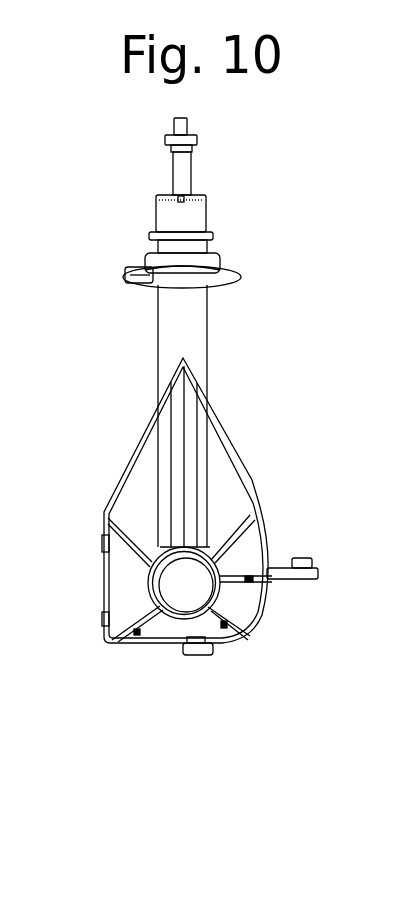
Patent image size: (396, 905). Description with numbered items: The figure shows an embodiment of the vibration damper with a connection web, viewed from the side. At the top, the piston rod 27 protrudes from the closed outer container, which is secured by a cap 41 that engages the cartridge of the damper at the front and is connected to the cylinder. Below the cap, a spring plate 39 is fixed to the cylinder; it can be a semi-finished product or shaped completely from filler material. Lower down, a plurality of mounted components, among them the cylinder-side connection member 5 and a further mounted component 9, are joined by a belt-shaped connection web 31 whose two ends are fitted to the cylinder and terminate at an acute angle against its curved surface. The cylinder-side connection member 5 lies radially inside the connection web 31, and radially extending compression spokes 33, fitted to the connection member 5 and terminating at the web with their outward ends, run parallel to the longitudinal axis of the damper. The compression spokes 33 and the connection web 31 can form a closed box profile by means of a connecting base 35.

The piston rod 27 is at (192, 165).
The cap 41 is at (188, 216).
The spring plate 39 is at (240, 268).
The connection web 31 is at (245, 455).
The connecting base 35 is at (137, 497).
The compression spokes 33 is at (247, 527).
The cylinder-side connection member 5 is at (173, 613).
The mounted component 9 is at (320, 568).